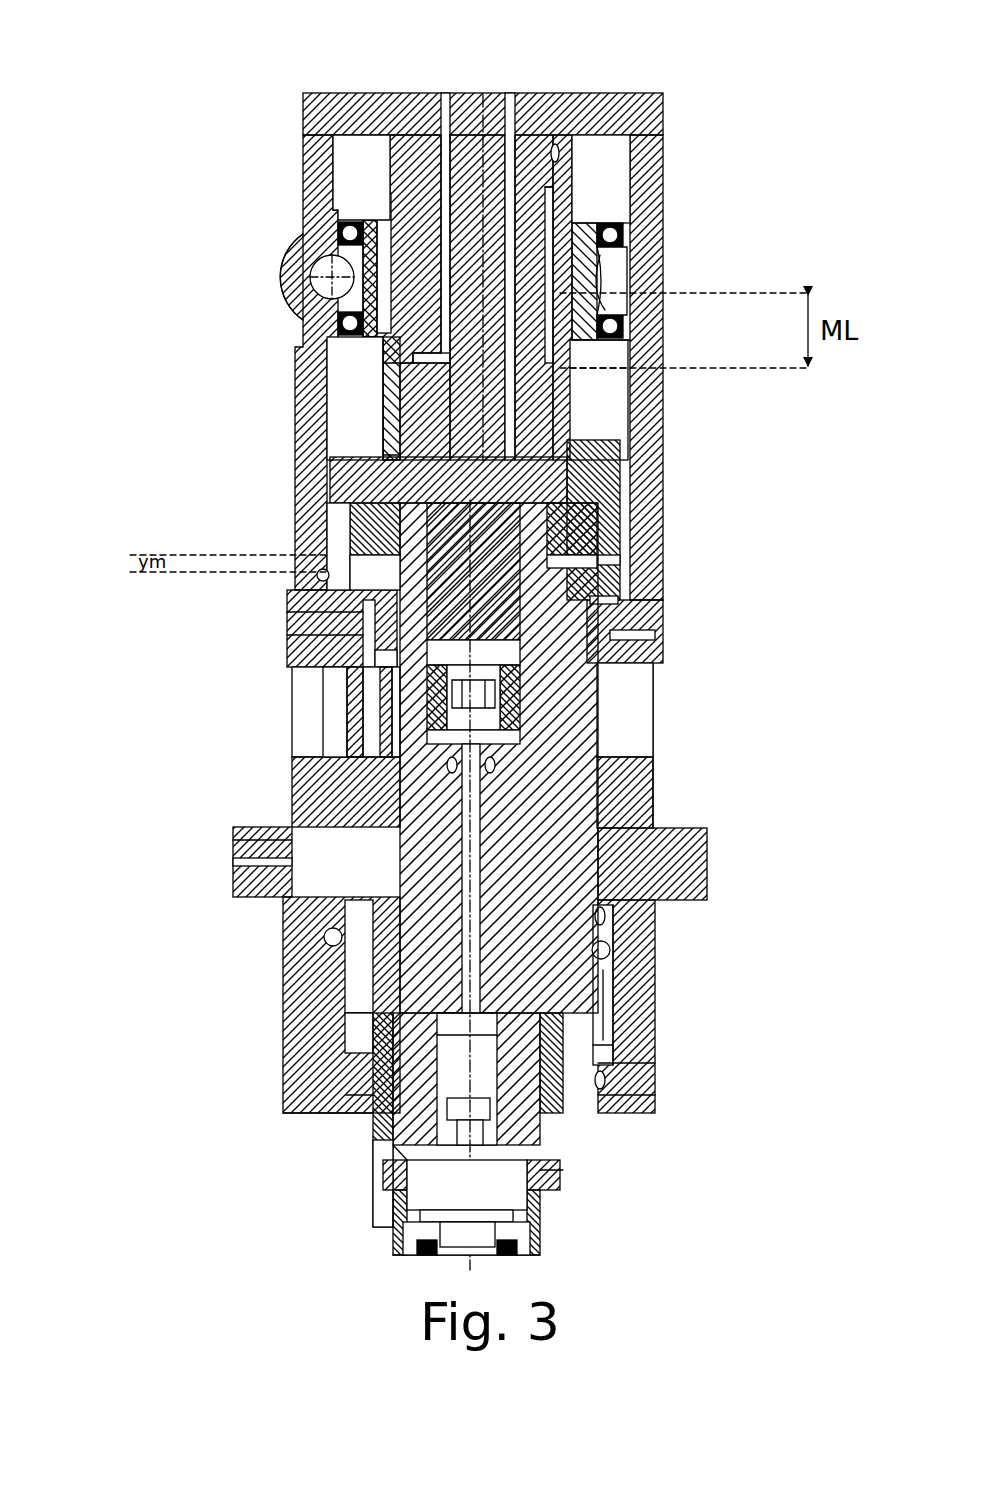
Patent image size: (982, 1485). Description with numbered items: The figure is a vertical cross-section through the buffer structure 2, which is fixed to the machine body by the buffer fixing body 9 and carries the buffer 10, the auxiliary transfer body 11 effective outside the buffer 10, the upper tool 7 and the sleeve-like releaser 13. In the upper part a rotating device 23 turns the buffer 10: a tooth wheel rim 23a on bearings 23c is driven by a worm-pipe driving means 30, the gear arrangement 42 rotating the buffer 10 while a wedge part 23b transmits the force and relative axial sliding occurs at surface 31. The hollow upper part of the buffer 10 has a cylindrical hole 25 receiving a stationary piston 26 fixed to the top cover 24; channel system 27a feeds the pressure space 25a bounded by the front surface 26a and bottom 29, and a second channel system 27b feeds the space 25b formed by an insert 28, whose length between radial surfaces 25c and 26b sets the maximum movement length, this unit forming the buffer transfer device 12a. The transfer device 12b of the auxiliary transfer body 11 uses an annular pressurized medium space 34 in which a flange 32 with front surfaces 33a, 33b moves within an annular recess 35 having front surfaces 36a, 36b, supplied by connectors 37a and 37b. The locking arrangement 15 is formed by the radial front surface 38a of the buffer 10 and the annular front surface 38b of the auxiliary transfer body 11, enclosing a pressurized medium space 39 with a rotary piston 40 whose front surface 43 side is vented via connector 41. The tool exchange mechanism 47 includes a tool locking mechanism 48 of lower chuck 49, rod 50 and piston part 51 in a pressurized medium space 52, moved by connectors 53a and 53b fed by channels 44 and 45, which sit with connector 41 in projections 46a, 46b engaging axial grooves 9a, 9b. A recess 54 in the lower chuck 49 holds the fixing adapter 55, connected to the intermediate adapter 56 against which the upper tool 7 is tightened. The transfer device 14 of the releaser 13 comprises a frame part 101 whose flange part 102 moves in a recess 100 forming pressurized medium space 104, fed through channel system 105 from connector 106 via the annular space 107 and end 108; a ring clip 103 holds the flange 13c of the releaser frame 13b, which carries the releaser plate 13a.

The buffer structure 2 is at (748, 540).
The upper tool 7 is at (470, 1248).
The buffer fixing body 9 is at (305, 762).
The axial groove 9a is at (335, 695).
The axial groove 9b is at (628, 722).
The buffer 10 is at (395, 800).
The auxiliary transfer body 11 is at (385, 598).
The buffer transfer device 12a is at (465, 297).
The transfer device for the auxiliary transfer body 12b is at (602, 1038).
The releaser 13 is at (548, 1250).
The releaser plate 13a is at (510, 1252).
The releaser frame 13b is at (520, 1215).
The flange 13c is at (548, 1177).
The transfer device of the releaser 14 is at (245, 1160).
The locking arrangement 15 is at (345, 538).
The rotating device 23 is at (632, 272).
The tooth wheel rim 23a is at (362, 240).
The wedge part 23b is at (395, 165).
The bearings 23c is at (605, 300).
The top cover 24 is at (630, 100).
The cylindrical hole 25 is at (550, 345).
The pressure space 25a is at (430, 470).
The pressurized medium space 25b is at (385, 330).
The radial surface 25c is at (600, 312).
The stationary piston 26 is at (445, 385).
The front surface 26a is at (400, 440).
The radial surface 26b is at (405, 310).
The channel system 27a is at (520, 210).
The second channel system 27b is at (445, 100).
The insert 28 is at (583, 332).
The bottom 29 is at (585, 420).
The driving means 30 is at (325, 268).
The surface 31 is at (575, 205).
The annular protruding flange 32 is at (612, 932).
The front surface 33a is at (612, 880).
The front surface 33b is at (612, 967).
The annular pressurized medium space 34 is at (628, 1000).
The annular recess 35 is at (612, 990).
The front surface 36a is at (645, 845).
The front surface 36b is at (612, 1090).
The pressurized medium connector 37a is at (612, 905).
The pressurized medium connector 37b is at (620, 1065).
The radial front surface 38a is at (585, 462).
The annular front surface 38b is at (625, 670).
The annular pressurized medium space 39 is at (575, 565).
The rotary piston 40 is at (590, 515).
The pressurized medium connector 41 is at (635, 633).
The gear arrangement 42 is at (278, 248).
The front surface 43 is at (610, 602).
The pressurized medium channel 44 is at (310, 650).
The pressurized medium channel 45 is at (305, 612).
The projection 46a is at (290, 598).
The projection 46b is at (632, 610).
The tool exchange mechanism 47 is at (372, 1008).
The tool locking mechanism 48 is at (250, 862).
The lower chuck 49 is at (385, 1140).
The rod 50 is at (420, 1003).
The piston part 51 is at (345, 683).
The pressurized medium space 52 is at (420, 815).
The pressurized medium connector 53a is at (330, 720).
The pressurized medium connector 53b is at (290, 622).
The recess 54 is at (447, 1070).
The fixing adapter 55 is at (468, 1112).
The intermediate adapter 56 is at (440, 1185).
The recess 100 is at (380, 1060).
The frame part 101 is at (380, 1122).
The flange part 102 is at (380, 1095).
The ring clip 103 is at (400, 1155).
The pressurized medium space 104 is at (548, 1027).
The channel system 105 is at (350, 945).
The pressurized medium connector 106 is at (265, 860).
The annular space 107 is at (350, 905).
The end 108 is at (265, 840).